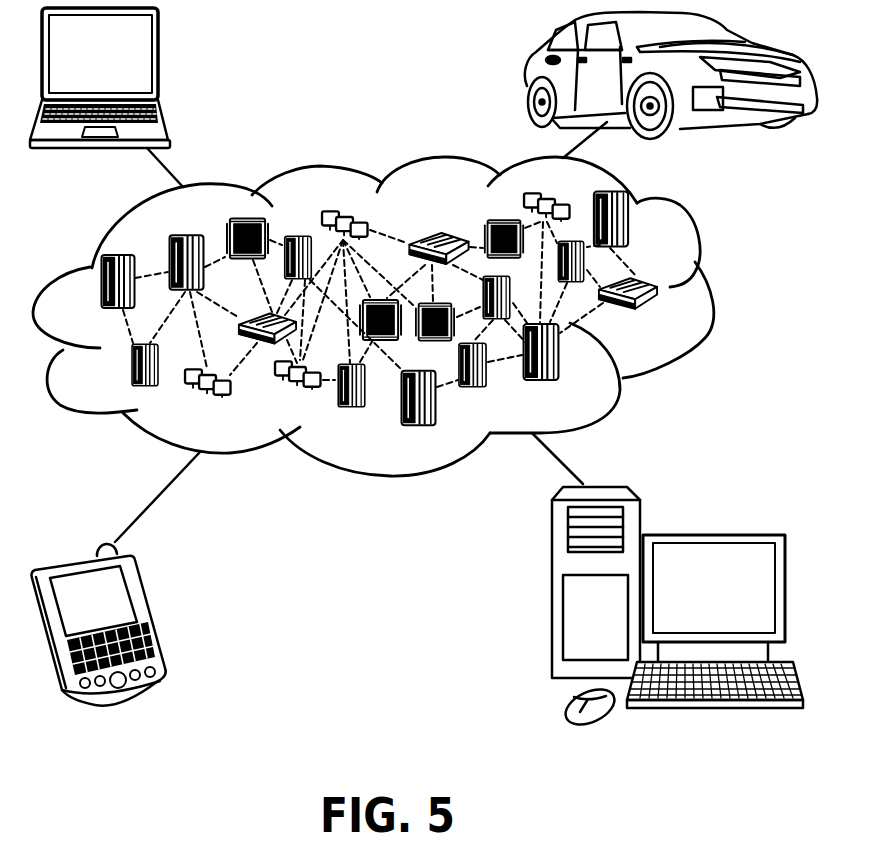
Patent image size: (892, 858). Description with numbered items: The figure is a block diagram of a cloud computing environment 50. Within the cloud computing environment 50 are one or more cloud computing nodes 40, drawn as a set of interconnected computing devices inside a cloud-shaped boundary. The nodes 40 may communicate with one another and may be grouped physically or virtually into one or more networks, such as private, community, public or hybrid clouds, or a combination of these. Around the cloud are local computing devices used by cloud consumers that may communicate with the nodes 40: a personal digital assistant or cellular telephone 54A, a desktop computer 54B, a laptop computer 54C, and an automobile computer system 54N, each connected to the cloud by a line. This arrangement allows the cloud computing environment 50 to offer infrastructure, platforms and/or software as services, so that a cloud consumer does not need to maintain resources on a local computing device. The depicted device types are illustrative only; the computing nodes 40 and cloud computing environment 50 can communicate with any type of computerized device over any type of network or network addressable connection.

The cloud computing nodes 40 is at (668, 318).
The cloud computing environment 50 is at (717, 292).
The personal digital assistant or cellular telephone 54A is at (150, 615).
The desktop computer 54B is at (710, 535).
The laptop computer 54C is at (158, 62).
The automobile computer system 54N is at (526, 75).